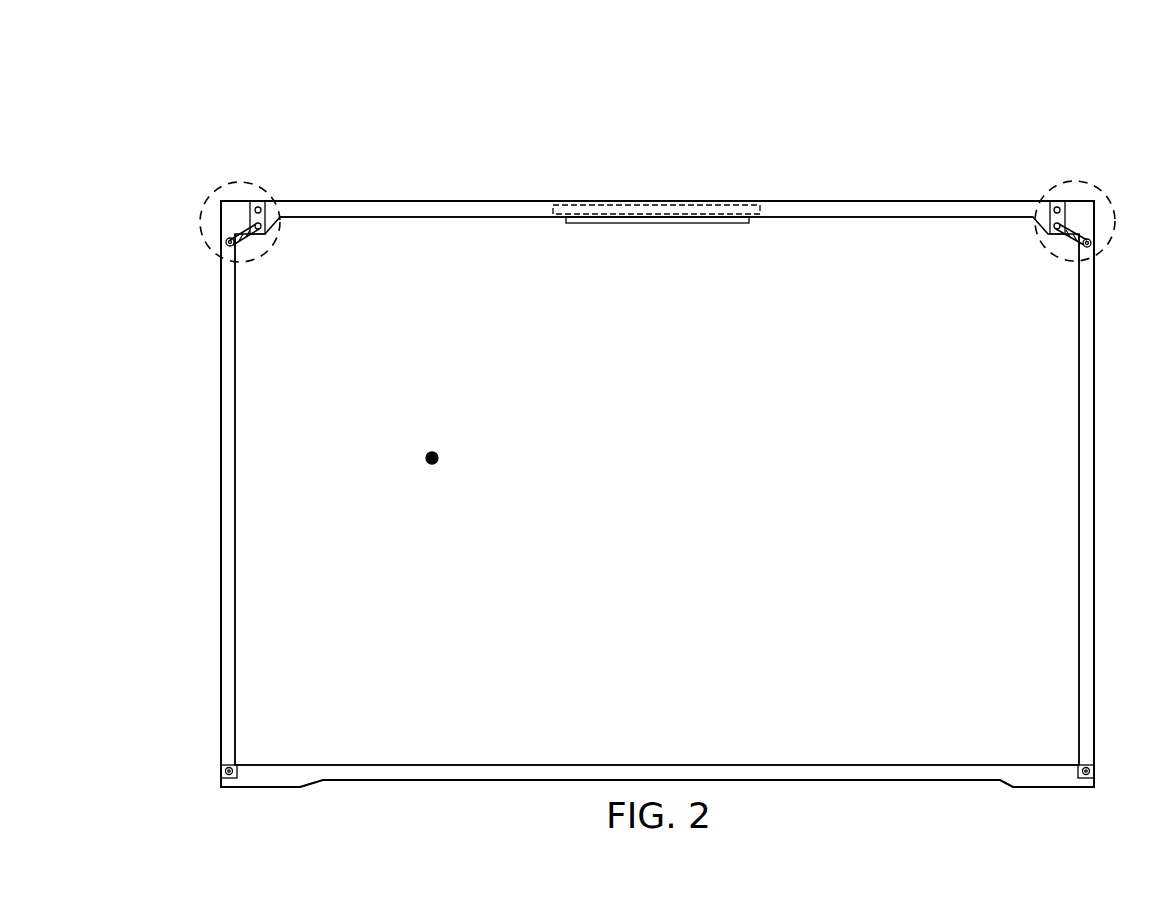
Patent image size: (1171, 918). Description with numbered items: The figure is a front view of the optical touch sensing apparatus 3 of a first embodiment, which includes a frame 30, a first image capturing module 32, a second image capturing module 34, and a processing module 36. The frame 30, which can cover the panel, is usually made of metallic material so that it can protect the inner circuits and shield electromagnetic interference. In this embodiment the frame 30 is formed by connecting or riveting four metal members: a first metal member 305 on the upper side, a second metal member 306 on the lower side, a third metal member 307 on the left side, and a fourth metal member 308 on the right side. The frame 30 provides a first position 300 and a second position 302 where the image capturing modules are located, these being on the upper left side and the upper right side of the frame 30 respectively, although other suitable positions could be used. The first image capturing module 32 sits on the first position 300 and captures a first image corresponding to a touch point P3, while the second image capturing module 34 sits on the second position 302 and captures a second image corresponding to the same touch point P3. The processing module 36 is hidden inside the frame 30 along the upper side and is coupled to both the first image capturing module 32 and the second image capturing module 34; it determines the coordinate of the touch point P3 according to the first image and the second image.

The optical touch sensing apparatus 3 is at (612, 76).
The frame 30 is at (896, 201).
The first image capturing module 32 is at (255, 208).
The second image capturing module 34 is at (1082, 208).
The processing module 36 is at (672, 206).
The first position 300 is at (274, 206).
The second position 302 is at (1098, 198).
The first metal member 305 is at (444, 211).
The second metal member 306 is at (443, 773).
The third metal member 307 is at (222, 475).
The fourth metal member 308 is at (1080, 475).
The touch point P3 is at (439, 442).